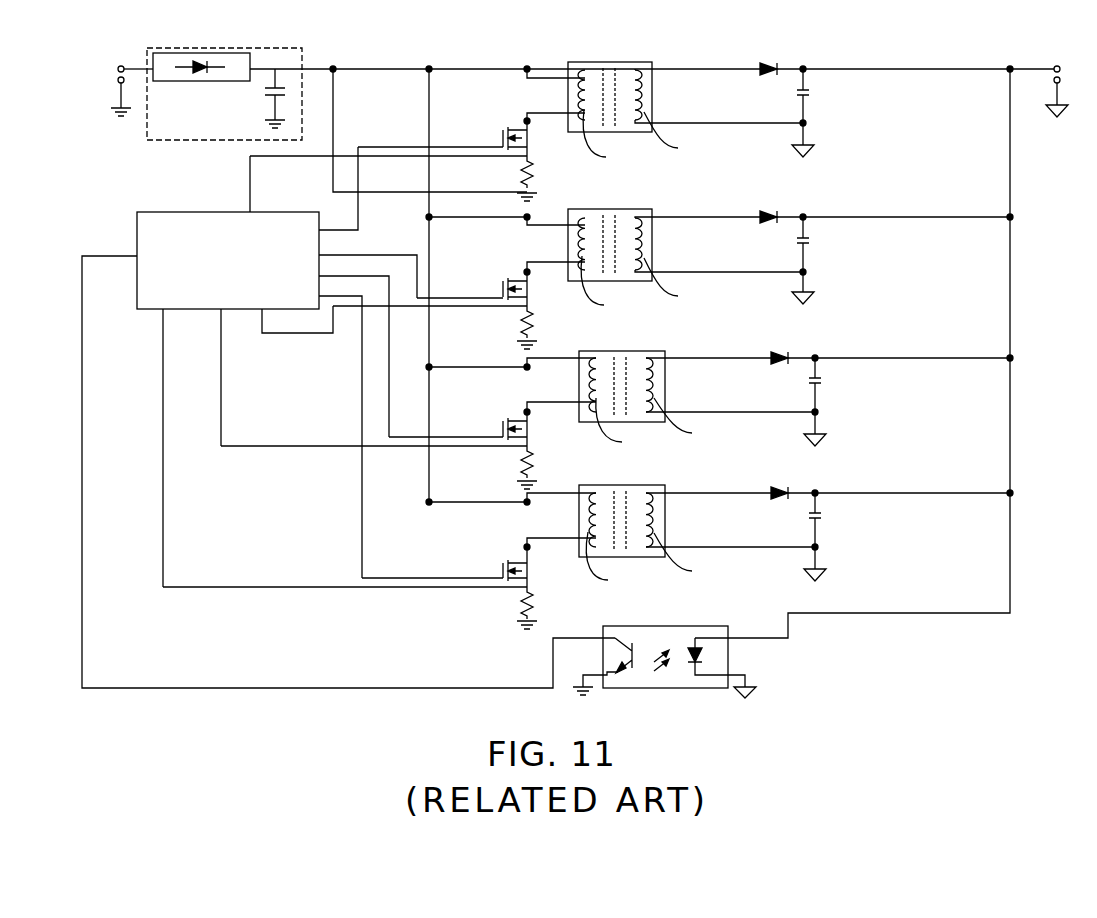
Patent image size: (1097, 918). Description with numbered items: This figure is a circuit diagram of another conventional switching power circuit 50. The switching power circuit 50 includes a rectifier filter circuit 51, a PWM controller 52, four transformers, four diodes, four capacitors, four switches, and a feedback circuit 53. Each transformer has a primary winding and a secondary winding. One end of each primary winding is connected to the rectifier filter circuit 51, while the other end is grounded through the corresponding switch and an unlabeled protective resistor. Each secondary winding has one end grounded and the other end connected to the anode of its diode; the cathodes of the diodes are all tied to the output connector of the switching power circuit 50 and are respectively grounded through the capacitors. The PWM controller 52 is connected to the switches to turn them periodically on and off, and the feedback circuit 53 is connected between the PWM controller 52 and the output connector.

The switching power circuit 50 is at (966, 54).
The rectifier filter circuit 51 is at (255, 48).
The PWM controller 52 is at (136, 213).
The feedback circuit 53 is at (693, 689).